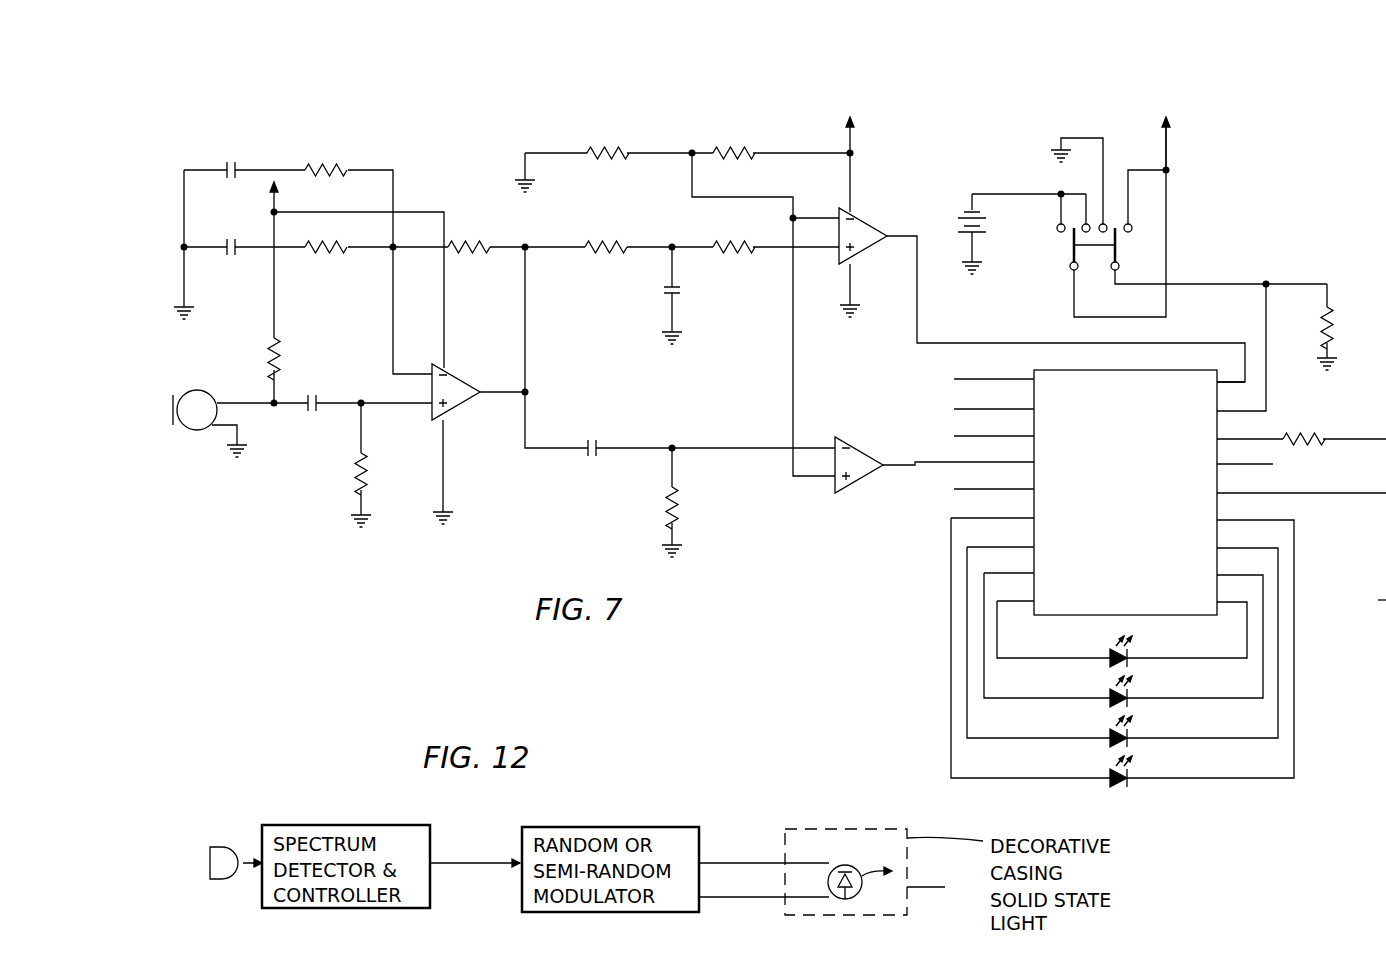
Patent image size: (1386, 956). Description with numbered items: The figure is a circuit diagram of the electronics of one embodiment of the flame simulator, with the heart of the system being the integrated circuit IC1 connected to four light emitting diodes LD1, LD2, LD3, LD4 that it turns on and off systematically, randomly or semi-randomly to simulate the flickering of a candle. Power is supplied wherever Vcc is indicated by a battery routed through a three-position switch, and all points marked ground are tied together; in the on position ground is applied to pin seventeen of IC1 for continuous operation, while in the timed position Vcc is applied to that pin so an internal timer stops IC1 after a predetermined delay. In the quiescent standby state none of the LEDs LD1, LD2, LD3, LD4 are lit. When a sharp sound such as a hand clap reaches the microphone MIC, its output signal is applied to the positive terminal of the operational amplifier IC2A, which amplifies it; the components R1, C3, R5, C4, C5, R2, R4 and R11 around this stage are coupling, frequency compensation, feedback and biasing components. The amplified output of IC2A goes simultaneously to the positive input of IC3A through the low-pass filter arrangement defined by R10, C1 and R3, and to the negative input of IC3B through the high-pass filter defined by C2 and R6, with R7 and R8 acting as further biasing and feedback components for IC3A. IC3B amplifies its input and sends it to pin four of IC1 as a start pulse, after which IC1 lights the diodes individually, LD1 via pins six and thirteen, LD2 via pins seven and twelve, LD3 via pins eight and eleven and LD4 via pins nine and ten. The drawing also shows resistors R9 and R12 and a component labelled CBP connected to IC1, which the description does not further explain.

In FIG. 7, the capacitor C5 is at (228, 156).
In FIG. 7, the resistor R4 is at (326, 155).
In FIG. 7, the capacitor C4 is at (226, 263).
In FIG. 7, the resistor R2 is at (326, 264).
In FIG. 7, the resistor R11 is at (469, 264).
In FIG. 7, the supply voltage Vcc is at (737, 242).
In FIG. 7, the resistor R1 is at (287, 307).
In FIG. 7, the capacitor C3 is at (310, 423).
In FIG. 7, the resistor R5 is at (372, 465).
In FIG. 7, the operational amplifier IC2A is at (478, 434).
In FIG. 7, the capacitor C2 is at (590, 466).
In FIG. 7, the resistor R6 is at (686, 502).
In FIG. 7, the resistor R7 is at (608, 143).
In FIG. 7, the resistor R8 is at (734, 143).
In FIG. 7, the resistor R10 is at (602, 264).
In FIG. 7, the resistor R3 is at (734, 264).
In FIG. 7, the capacitor C1 is at (683, 295).
In FIG. 7, the amplifier IC3A is at (1042, 267).
In FIG. 7, the amplifier IC3B is at (934, 455).
In FIG. 7, the integrated circuit IC1 is at (1170, 489).
In FIG. 7, the light emitting diode LD4 is at (1122, 640).
In FIG. 7, the light emitting diode LD3 is at (1123, 645).
In FIG. 7, the light emitting diode LD2 is at (1122, 653).
In FIG. 7, the light emitting diode LD1 is at (1122, 659).
In FIG. 7, the resistor R9 is at (1304, 426).
In FIG. 7, the resistor R12 is at (1344, 327).
In FIG. 7, the capacitor bypass CBP is at (1360, 575).
In FIG. 12, the microphone MIC is at (189, 863).